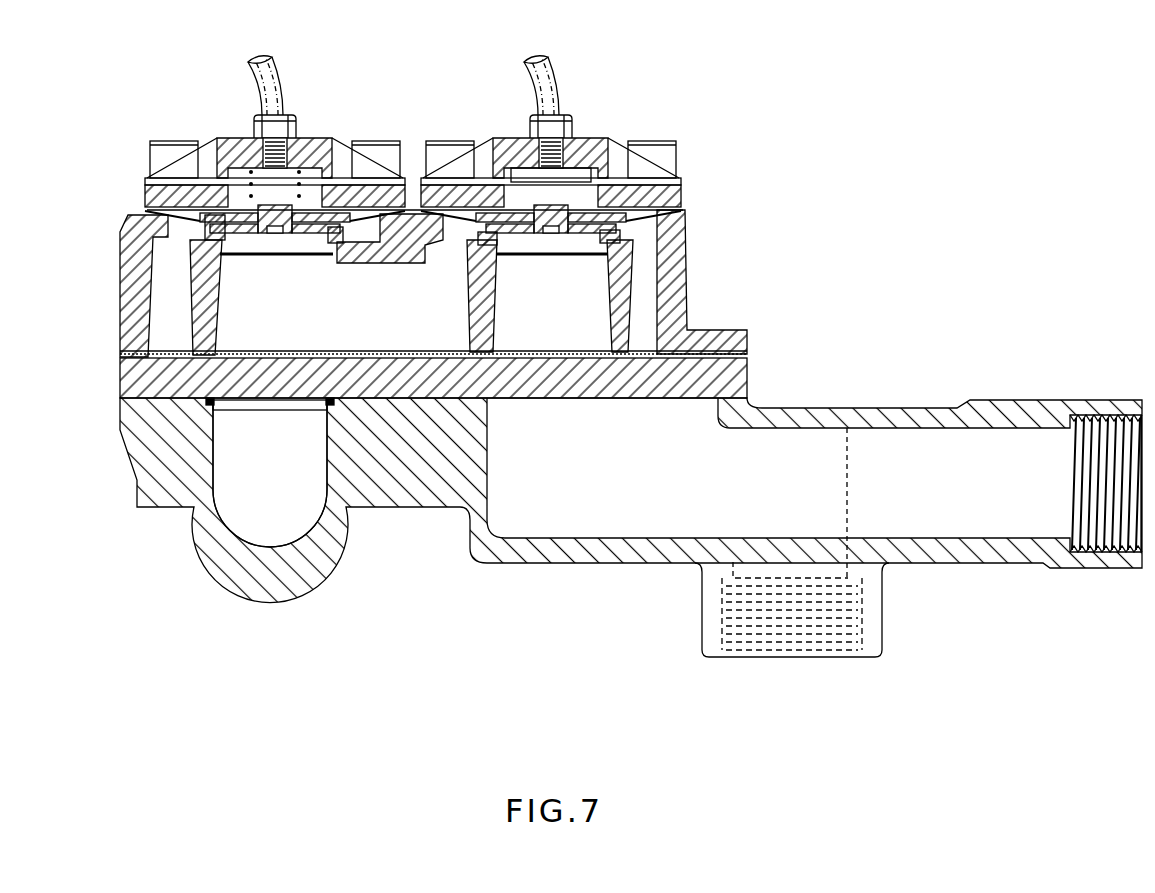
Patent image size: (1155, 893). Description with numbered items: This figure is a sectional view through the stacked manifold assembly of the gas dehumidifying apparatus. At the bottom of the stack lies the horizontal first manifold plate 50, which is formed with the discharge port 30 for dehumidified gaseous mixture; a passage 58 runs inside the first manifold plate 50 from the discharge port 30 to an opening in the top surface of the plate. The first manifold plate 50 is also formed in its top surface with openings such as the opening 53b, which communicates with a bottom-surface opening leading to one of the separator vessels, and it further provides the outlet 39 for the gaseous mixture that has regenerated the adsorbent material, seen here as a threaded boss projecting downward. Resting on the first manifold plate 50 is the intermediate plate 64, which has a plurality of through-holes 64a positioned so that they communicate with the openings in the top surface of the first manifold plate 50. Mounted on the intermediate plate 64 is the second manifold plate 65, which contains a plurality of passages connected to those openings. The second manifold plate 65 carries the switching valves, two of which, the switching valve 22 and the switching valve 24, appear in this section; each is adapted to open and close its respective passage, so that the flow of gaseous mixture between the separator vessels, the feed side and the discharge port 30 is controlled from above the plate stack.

The switching valve 22 is at (315, 118).
The switching valve 24 is at (608, 110).
The second manifold plate 65 is at (673, 255).
The through-holes 64a is at (325, 378).
The intermediate plate 64 is at (734, 373).
The passage 58 is at (784, 432).
The discharge port 30 is at (1088, 418).
The opening 53b is at (222, 428).
The first manifold plate 50 is at (403, 482).
The outlet 39 is at (858, 633).